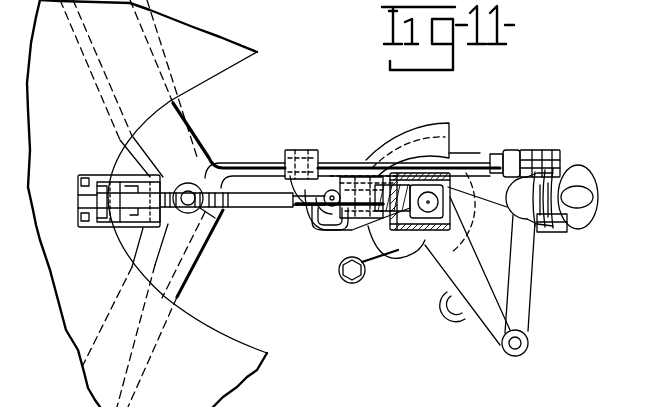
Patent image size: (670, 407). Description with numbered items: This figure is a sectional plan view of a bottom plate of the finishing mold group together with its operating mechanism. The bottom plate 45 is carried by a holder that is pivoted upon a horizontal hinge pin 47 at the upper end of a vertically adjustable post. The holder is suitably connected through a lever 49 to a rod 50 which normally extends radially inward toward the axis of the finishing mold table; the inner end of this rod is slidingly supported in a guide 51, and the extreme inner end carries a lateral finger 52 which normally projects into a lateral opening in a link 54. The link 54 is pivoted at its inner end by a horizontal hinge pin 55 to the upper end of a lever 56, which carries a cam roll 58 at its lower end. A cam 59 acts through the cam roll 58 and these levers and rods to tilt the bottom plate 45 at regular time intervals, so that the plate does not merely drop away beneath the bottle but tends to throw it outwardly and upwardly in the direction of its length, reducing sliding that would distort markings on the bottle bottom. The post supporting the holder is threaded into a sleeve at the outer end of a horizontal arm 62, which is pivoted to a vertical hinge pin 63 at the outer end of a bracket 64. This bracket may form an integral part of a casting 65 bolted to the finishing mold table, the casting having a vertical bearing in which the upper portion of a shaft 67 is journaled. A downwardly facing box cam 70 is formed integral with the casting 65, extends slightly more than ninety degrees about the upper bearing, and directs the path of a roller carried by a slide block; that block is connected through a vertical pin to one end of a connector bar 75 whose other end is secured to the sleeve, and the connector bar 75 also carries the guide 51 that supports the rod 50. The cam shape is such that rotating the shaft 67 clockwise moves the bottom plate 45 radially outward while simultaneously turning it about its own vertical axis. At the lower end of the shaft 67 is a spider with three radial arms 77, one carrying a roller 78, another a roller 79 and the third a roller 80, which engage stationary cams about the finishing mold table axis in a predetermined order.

The bottom plate 45 is at (585, 172).
The horizontal hinge pin 47 is at (554, 236).
The lever 49 is at (548, 152).
The rod 50 is at (345, 162).
The guide 51 is at (300, 156).
The lateral finger 52 is at (210, 217).
The link 54 is at (270, 198).
The horizontal hinge pin 55 is at (118, 212).
The lever 56 is at (114, 182).
The cam roll 58 is at (186, 183).
The cam 59 is at (188, 137).
The horizontal arm 62 is at (531, 298).
The vertical hinge pin 63 is at (509, 352).
The bracket 64 is at (492, 334).
The casting 65 is at (478, 240).
The shaft 67 is at (430, 208).
The box cam 70 is at (438, 130).
The connector bar 75 is at (497, 195).
The radial arms 77 is at (392, 255).
The roller 78 is at (443, 303).
The roller 79 is at (332, 224).
The roller 80 is at (338, 271).